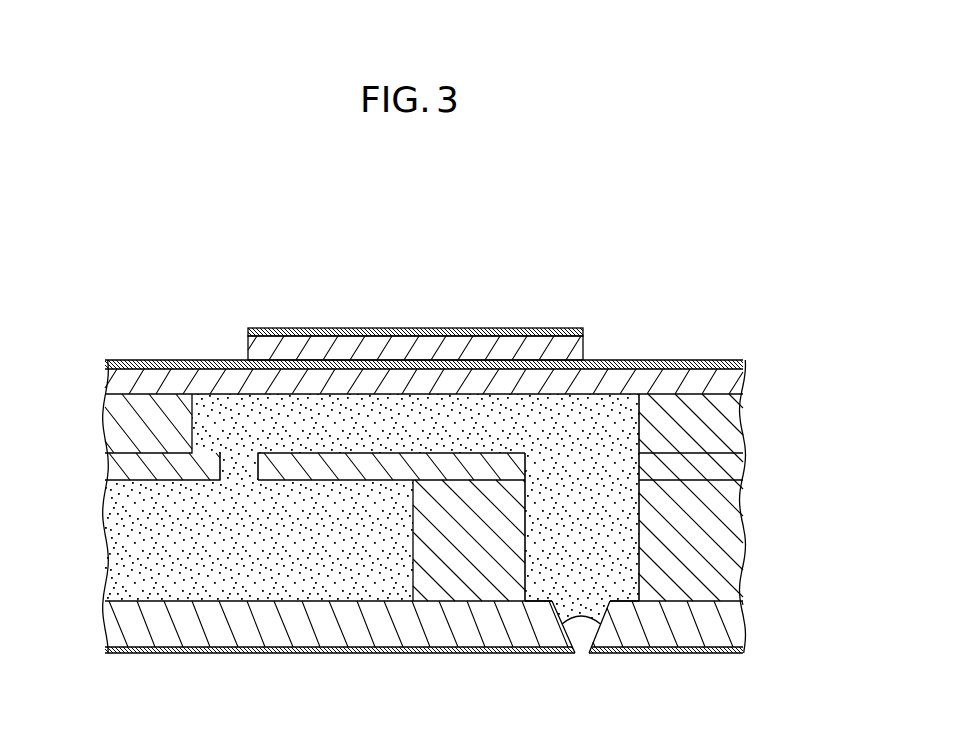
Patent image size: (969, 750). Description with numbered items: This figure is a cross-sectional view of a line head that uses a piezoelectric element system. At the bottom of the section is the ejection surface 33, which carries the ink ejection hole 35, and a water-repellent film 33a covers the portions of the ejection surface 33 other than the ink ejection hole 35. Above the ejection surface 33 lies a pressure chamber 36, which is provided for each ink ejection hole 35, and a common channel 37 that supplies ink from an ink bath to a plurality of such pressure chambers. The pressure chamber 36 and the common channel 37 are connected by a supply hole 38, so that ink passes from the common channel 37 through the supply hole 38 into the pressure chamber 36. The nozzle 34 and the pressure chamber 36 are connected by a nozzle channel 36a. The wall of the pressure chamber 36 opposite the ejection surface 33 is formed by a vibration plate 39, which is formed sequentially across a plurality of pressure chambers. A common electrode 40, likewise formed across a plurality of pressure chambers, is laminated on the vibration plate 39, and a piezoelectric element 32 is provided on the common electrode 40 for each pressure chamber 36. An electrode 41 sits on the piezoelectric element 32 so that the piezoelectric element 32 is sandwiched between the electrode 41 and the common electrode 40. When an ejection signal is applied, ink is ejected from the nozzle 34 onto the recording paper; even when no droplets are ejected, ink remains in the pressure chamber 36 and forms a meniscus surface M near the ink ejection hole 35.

The electrode 41 is at (583, 334).
The piezoelectric element 32 is at (583, 348).
The common electrode 40 is at (713, 363).
The vibration plate 39 is at (743, 377).
The pressure chamber 36 is at (424, 440).
The nozzle channel 36a is at (630, 507).
The supply hole 38 is at (249, 486).
The common channel 37 is at (192, 572).
The nozzle 34 is at (597, 603).
The meniscus surface M is at (583, 630).
The ink ejection hole 35 is at (589, 658).
The ejection surface 33 is at (252, 663).
The water-repellent film 33a is at (135, 653).